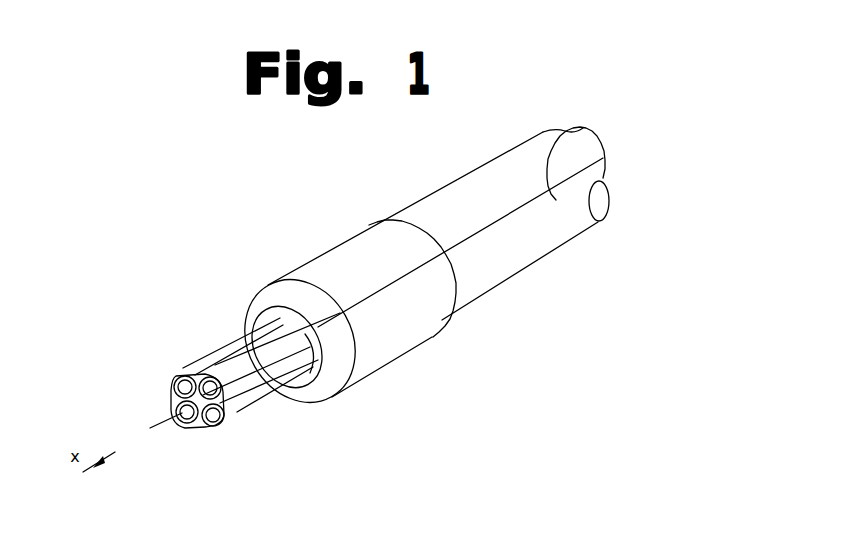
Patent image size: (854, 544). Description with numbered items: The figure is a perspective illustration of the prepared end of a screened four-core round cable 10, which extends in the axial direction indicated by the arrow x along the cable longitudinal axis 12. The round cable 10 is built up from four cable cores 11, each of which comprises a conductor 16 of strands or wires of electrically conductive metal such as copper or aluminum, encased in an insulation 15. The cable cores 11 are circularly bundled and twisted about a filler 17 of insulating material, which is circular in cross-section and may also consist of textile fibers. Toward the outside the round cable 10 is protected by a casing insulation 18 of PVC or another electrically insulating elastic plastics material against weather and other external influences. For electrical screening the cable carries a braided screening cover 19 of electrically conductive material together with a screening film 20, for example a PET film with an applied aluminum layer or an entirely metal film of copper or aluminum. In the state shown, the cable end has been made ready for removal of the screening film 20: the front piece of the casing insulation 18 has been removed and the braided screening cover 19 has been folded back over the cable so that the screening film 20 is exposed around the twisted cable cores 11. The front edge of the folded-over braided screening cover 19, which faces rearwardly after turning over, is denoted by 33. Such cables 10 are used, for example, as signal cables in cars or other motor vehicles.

The screened four-core round cable 10 is at (411, 188).
The cable longitudinal axis 12 is at (583, 128).
The casing insulation 18 is at (506, 262).
The braided screening cover 19 is at (403, 340).
The front edge of the folded-over braided screening cover 33 is at (455, 262).
The screening film 20 is at (203, 362).
The filler 17 is at (172, 402).
The cable core 11 is at (185, 430).
The conductor 16 is at (215, 420).
The insulation 15 is at (213, 420).